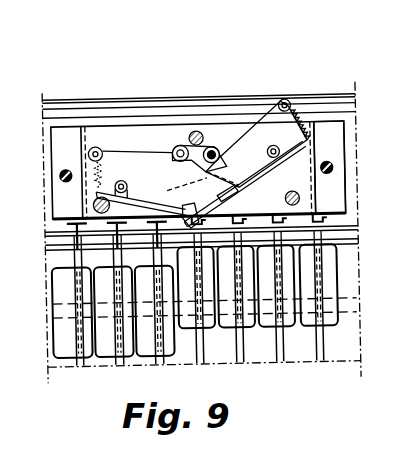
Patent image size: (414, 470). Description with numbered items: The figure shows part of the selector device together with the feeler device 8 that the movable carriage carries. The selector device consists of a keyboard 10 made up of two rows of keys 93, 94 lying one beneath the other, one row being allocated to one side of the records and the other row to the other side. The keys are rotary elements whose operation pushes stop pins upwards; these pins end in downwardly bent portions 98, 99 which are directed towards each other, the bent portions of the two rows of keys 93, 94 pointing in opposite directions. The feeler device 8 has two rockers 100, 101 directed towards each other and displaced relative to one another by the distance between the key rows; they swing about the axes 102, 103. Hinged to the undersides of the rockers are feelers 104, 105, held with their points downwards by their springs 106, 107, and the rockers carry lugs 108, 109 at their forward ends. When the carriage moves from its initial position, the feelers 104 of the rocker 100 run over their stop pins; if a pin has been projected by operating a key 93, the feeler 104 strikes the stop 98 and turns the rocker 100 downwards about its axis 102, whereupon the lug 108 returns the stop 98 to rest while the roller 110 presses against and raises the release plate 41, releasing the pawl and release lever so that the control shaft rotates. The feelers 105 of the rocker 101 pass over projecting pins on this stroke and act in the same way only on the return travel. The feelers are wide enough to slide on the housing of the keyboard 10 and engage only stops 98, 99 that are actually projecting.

The feeler device 8 is at (70, 200).
The keyboard 10 is at (222, 358).
The release plate 41 is at (227, 100).
The key 93 is at (330, 268).
The key 94 is at (68, 335).
The downwardly bent portion 98 is at (332, 214).
The downwardly bent portion 99 is at (72, 222).
The rocker 100 is at (259, 132).
The rocker 101 is at (133, 162).
The axis 102 is at (212, 147).
The axis 103 is at (181, 144).
The feeler 104 is at (260, 187).
The feeler 105 is at (148, 205).
The spring 106 is at (303, 133).
The spring 107 is at (93, 163).
The lug 108 is at (250, 210).
The lug 109 is at (232, 190).
The roller 110 is at (290, 114).